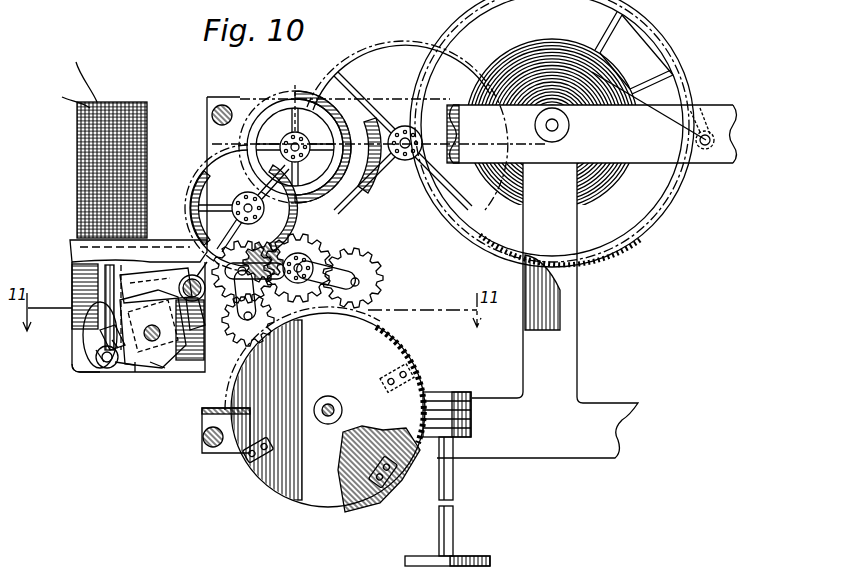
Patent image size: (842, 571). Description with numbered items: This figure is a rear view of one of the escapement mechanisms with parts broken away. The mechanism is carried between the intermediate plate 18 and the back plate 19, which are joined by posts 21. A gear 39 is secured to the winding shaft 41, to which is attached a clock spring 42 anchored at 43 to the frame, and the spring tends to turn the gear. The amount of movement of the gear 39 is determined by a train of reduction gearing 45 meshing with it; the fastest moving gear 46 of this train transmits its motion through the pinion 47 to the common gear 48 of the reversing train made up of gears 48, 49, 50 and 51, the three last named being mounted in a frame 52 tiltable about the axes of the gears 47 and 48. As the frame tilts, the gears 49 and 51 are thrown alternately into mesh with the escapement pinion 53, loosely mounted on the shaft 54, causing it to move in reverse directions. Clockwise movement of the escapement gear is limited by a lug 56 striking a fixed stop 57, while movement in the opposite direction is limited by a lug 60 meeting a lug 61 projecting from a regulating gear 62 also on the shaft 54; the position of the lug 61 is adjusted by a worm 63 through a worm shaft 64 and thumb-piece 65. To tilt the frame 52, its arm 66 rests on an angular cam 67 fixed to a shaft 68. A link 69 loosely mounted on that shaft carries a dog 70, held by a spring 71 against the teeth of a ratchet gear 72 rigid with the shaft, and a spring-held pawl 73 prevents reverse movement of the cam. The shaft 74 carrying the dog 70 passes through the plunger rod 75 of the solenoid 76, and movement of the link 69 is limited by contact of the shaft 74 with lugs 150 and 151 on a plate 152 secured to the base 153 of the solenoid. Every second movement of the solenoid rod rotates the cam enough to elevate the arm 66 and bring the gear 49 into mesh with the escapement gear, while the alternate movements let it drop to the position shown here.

The intermediate plate 18 is at (570, 355).
The back plate 19 is at (698, 160).
The posts 21 is at (212, 110).
The gear 39 is at (632, 218).
The winding shaft 41 is at (558, 125).
The clock spring 42 is at (580, 72).
The anchorage 43 is at (712, 142).
The train of reduction gearing 45 is at (297, 100).
The fastest moving gear 46 is at (206, 197).
The pinion 47 is at (305, 256).
The common gear 48 is at (338, 262).
The reversing gear 49 is at (376, 282).
The reversing gear 50 is at (224, 298).
The reversing gear 51 is at (240, 332).
The frame 52 is at (363, 292).
The escapement pinion 53 is at (365, 347).
The shaft 54 is at (333, 412).
The lug 56 is at (251, 464).
The fixed stop 57 is at (222, 452).
The lug 60 is at (412, 368).
The lug 61 is at (378, 482).
The regulating gear 62 is at (397, 472).
The worm 63 is at (471, 418).
The worm shaft 64 is at (447, 480).
The thumb-piece 65 is at (490, 560).
The arm 66 is at (152, 292).
The angular cam 67 is at (139, 368).
The shaft 68 is at (153, 341).
The link 69 is at (120, 365).
The dog 70 is at (97, 360).
The spring 71 is at (98, 354).
The ratchet gear 72 is at (158, 370).
The spring-held pawl 73 is at (193, 301).
The shaft 74 is at (110, 352).
The plunger rod 75 is at (106, 322).
The solenoid 76 is at (132, 146).
The lug 150 is at (108, 298).
The lug 151 is at (94, 374).
The plate 152 is at (78, 349).
The base 153 is at (160, 255).